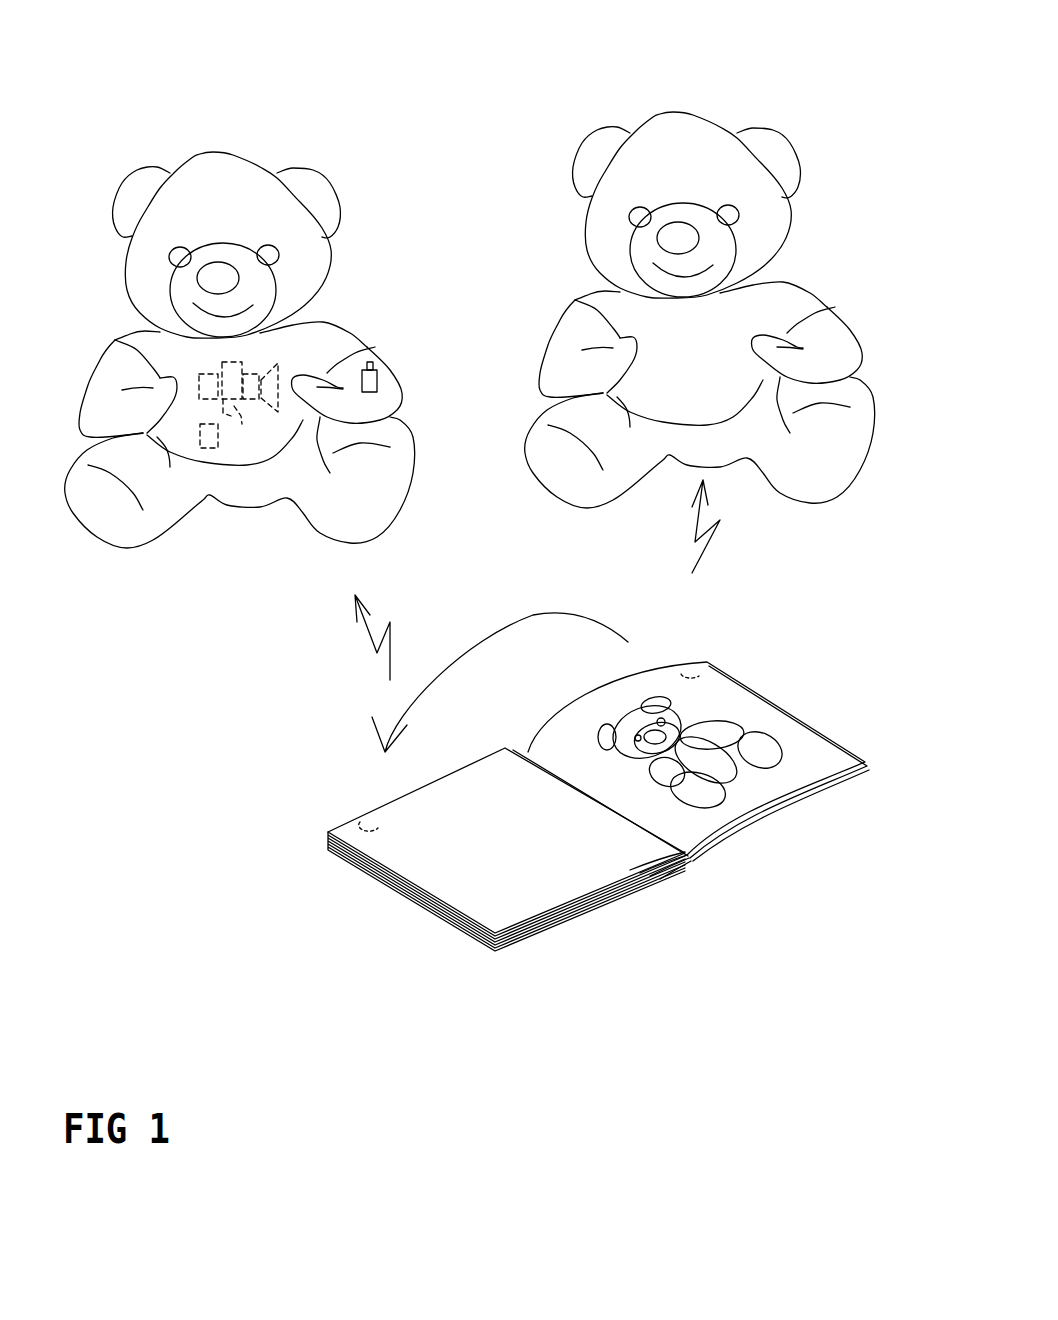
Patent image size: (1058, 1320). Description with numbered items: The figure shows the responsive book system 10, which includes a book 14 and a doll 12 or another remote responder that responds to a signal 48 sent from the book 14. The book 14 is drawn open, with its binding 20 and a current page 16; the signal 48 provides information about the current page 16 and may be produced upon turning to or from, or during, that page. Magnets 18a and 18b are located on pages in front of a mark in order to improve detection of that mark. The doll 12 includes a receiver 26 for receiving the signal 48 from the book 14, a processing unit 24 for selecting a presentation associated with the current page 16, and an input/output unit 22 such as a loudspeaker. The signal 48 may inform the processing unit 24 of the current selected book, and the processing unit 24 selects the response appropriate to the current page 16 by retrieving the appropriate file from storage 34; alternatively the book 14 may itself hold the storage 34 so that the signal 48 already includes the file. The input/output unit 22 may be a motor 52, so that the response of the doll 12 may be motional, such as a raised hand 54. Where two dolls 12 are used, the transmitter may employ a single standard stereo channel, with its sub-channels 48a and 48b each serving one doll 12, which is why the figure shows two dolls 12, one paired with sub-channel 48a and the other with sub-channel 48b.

The responsive book system 10 is at (783, 82).
The doll 12 is at (330, 333).
The book 14 is at (772, 594).
The current page 16 is at (485, 775).
The magnet 18a is at (697, 670).
The magnet 18b is at (363, 820).
The binding 20 is at (797, 800).
The input/output unit 22 is at (268, 365).
The processing unit 24 is at (240, 421).
The receiver 26 is at (198, 378).
The storage 34 is at (205, 450).
The signal 48 is at (488, 616).
The sub-channel 48a is at (366, 634).
The sub-channel 48b is at (693, 542).
The motor 52 is at (373, 363).
The raised hand 54 is at (383, 373).